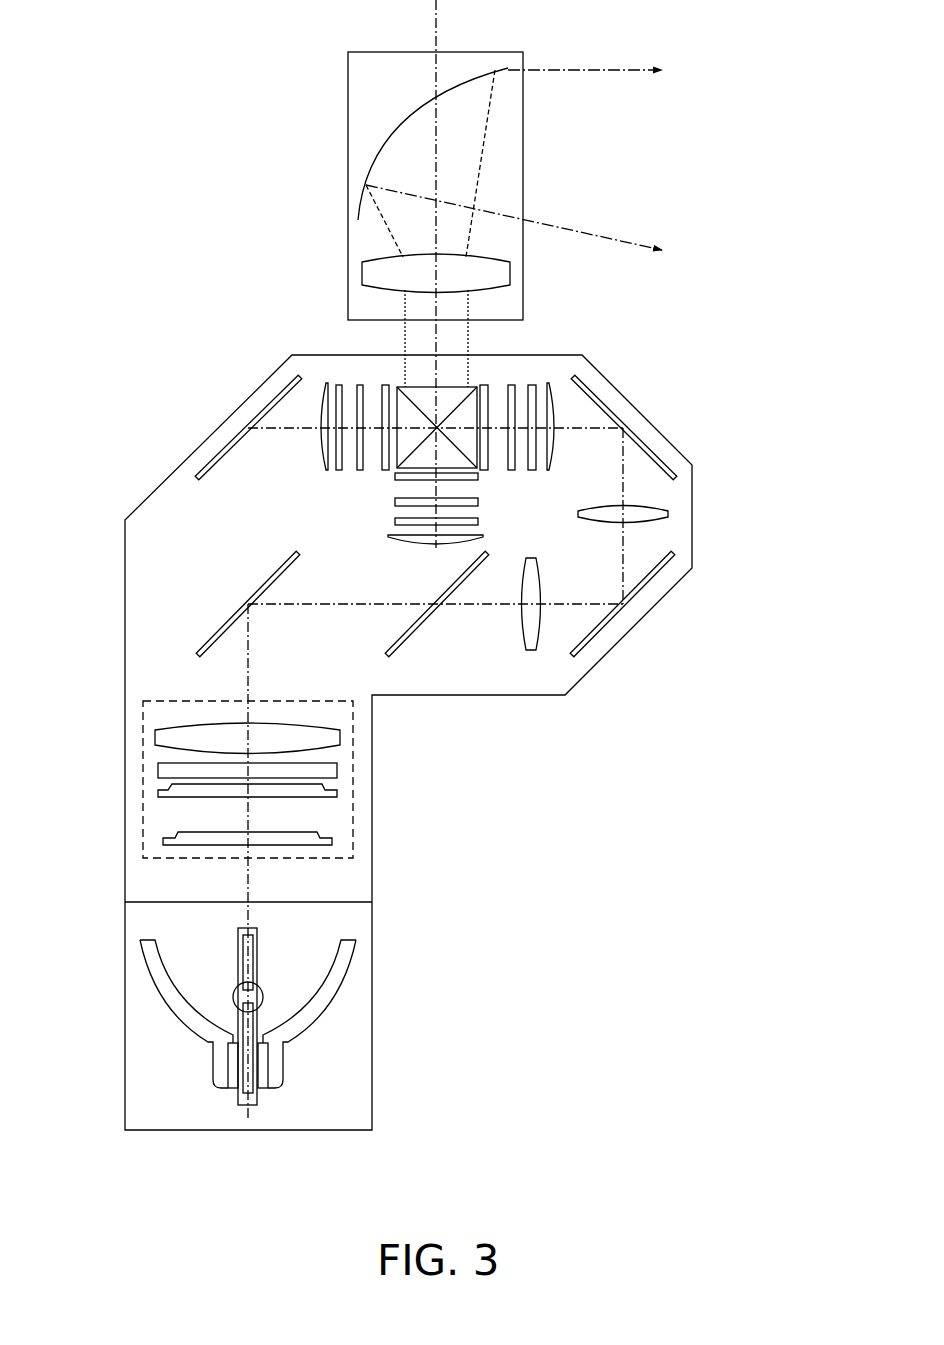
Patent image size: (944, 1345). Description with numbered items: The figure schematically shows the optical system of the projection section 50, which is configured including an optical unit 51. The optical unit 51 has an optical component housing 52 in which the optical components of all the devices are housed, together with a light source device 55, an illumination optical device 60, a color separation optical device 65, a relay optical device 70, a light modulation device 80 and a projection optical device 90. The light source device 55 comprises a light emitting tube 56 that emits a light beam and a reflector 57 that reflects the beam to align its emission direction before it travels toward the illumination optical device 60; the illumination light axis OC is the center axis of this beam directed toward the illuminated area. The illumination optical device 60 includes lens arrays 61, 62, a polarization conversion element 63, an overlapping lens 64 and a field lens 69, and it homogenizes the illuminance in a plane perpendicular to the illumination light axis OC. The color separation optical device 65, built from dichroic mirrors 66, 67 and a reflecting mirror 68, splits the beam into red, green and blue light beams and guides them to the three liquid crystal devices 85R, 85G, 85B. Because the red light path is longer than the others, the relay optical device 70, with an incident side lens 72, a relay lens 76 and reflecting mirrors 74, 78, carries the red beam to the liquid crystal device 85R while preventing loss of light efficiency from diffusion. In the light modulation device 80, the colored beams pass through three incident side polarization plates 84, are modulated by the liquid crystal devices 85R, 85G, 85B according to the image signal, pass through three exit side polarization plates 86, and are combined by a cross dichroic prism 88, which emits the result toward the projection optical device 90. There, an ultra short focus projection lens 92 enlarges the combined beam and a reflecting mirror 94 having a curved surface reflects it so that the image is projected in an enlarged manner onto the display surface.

The projection section 50 is at (154, 70).
The optical unit 51 is at (147, 352).
The optical component housing 52 is at (373, 770).
The light source device 55 is at (386, 1012).
The light emitting tube 56 is at (232, 997).
The reflector 57 is at (172, 1010).
The illumination optical device 60 is at (353, 822).
The lens array 61 is at (163, 838).
The lens array 62 is at (160, 795).
The polarization conversion element 63 is at (160, 771).
The overlapping lens 64 is at (158, 735).
The color separation optical device 65 is at (162, 546).
The dichroic mirror 66 is at (225, 625).
The dichroic mirror 67 is at (400, 637).
The reflecting mirror 68 is at (222, 450).
The field lens 69 is at (322, 455).
The relay optical device 70 is at (680, 600).
The incident side lens 72 is at (531, 652).
The reflecting mirror 74 is at (600, 637).
The relay lens 76 is at (660, 515).
The reflecting mirror 78 is at (640, 445).
The light modulation device 80 is at (372, 372).
The incident side polarization plate 84 is at (338, 470).
The liquid crystal device 85B is at (360, 385).
The liquid crystal device 85G is at (395, 503).
The liquid crystal device 85R is at (512, 392).
The exit side polarization plate 86 is at (484, 390).
The cross dichroic prism 88 is at (440, 398).
The projection optical device 90 is at (318, 97).
The projection lens 92 is at (370, 257).
The reflecting mirror 94 is at (373, 163).
The illumination light axis OC is at (250, 878).